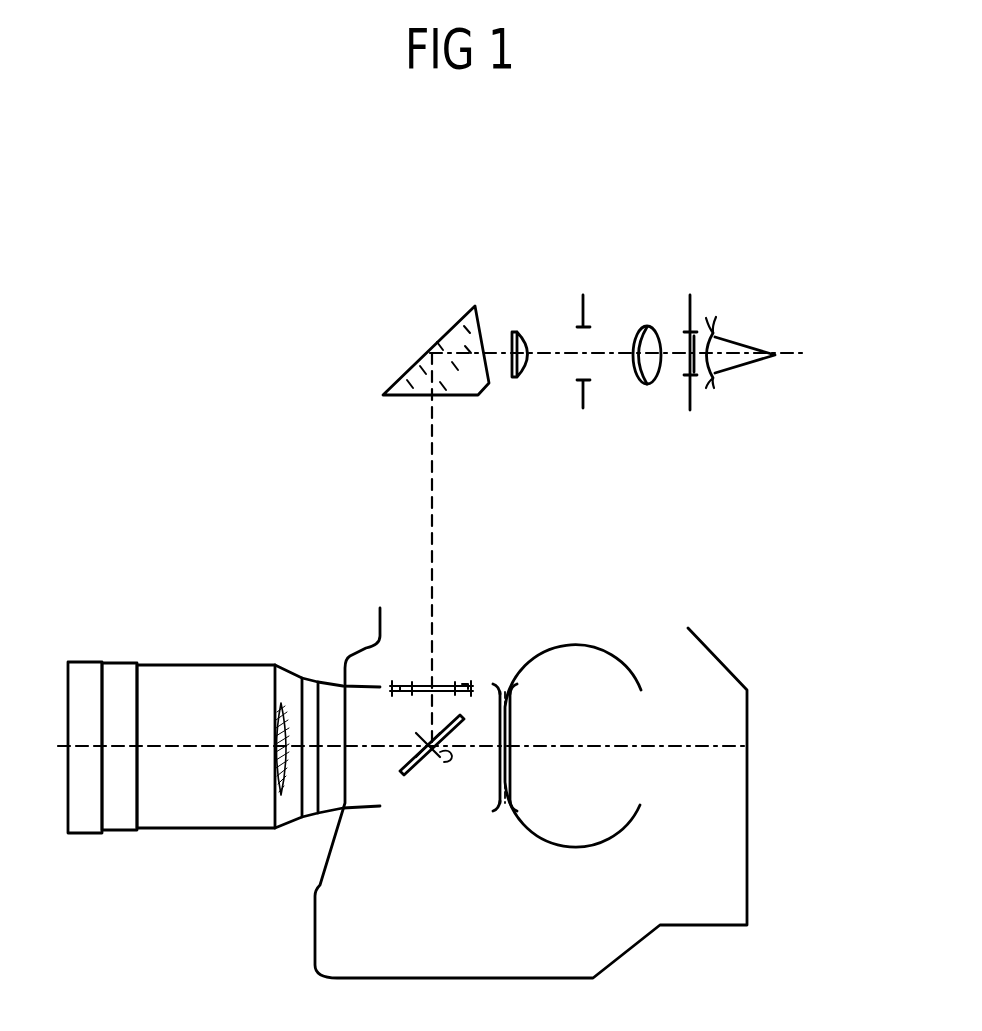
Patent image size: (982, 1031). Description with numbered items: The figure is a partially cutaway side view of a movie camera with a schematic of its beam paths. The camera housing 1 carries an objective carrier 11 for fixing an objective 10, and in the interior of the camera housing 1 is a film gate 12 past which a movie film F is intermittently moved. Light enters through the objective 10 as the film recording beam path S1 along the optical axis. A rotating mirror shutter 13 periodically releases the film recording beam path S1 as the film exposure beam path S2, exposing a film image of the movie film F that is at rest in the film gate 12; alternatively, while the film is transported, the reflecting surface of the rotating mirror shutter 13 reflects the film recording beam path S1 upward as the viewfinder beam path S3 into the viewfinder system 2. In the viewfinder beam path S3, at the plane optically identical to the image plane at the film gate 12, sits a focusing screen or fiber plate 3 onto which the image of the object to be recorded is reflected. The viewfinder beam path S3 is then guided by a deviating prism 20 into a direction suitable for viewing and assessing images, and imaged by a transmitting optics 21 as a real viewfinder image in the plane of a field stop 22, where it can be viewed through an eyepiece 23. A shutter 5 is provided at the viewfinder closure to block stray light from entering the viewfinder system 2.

The camera housing 1 is at (727, 842).
The viewfinder system 2 is at (559, 277).
The focusing screen or fiber plate 3 is at (413, 687).
The shutter 5 is at (697, 300).
The objective 10 is at (195, 815).
The objective carrier 11 is at (340, 758).
The film gate 12 is at (507, 748).
The rotating mirror shutter 13 is at (422, 760).
The deviating prism 20 is at (450, 345).
The transmitting optics 21 is at (512, 335).
The field stop 22 is at (585, 400).
The eyepiece 23 is at (642, 330).
The movie film F is at (525, 653).
The film recording beam path S1 is at (223, 745).
The film exposure beam path S2 is at (478, 747).
The viewfinder beam path S3 is at (430, 537).